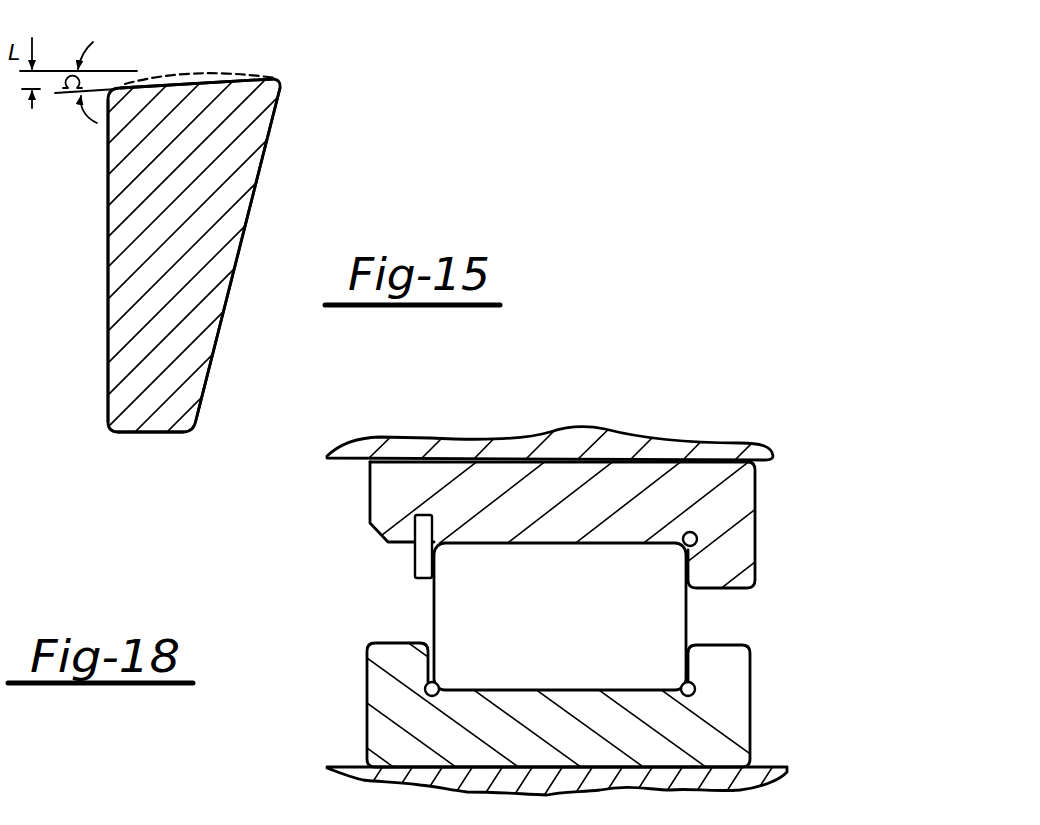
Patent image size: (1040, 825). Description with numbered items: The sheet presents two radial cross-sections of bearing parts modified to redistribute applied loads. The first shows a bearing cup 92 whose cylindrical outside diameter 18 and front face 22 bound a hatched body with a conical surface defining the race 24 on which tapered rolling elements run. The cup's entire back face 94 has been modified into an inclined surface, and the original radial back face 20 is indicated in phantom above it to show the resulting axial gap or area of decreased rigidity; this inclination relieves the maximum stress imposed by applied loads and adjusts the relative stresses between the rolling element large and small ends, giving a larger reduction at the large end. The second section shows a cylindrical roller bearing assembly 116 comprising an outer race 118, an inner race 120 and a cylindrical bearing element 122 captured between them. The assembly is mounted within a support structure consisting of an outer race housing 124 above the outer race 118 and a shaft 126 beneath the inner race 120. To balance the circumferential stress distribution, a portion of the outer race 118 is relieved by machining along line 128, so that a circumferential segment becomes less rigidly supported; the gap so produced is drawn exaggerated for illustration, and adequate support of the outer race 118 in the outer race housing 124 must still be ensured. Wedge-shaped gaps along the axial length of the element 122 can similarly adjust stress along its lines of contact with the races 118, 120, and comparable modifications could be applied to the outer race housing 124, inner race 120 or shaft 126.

In FIG. 15, the cylindrical outside diameter 18 is at (108, 227).
In FIG. 15, the radial back face 20 is at (234, 77).
In FIG. 15, the front face 22 is at (163, 433).
In FIG. 15, the race 24 is at (227, 292).
In FIG. 15, the bearing cup 92 is at (102, 332).
In FIG. 15, the back face 94 is at (183, 86).
In FIG. 18, the bearing assembly 116 is at (292, 603).
In FIG. 18, the outer race 118 is at (747, 545).
In FIG. 18, the inner race 120 is at (367, 692).
In FIG. 18, the cylindrical bearing element 122 is at (433, 603).
In FIG. 18, the outer race housing 124 is at (765, 463).
In FIG. 18, the shaft 126 is at (340, 768).
In FIG. 18, the machining line 128 is at (372, 463).